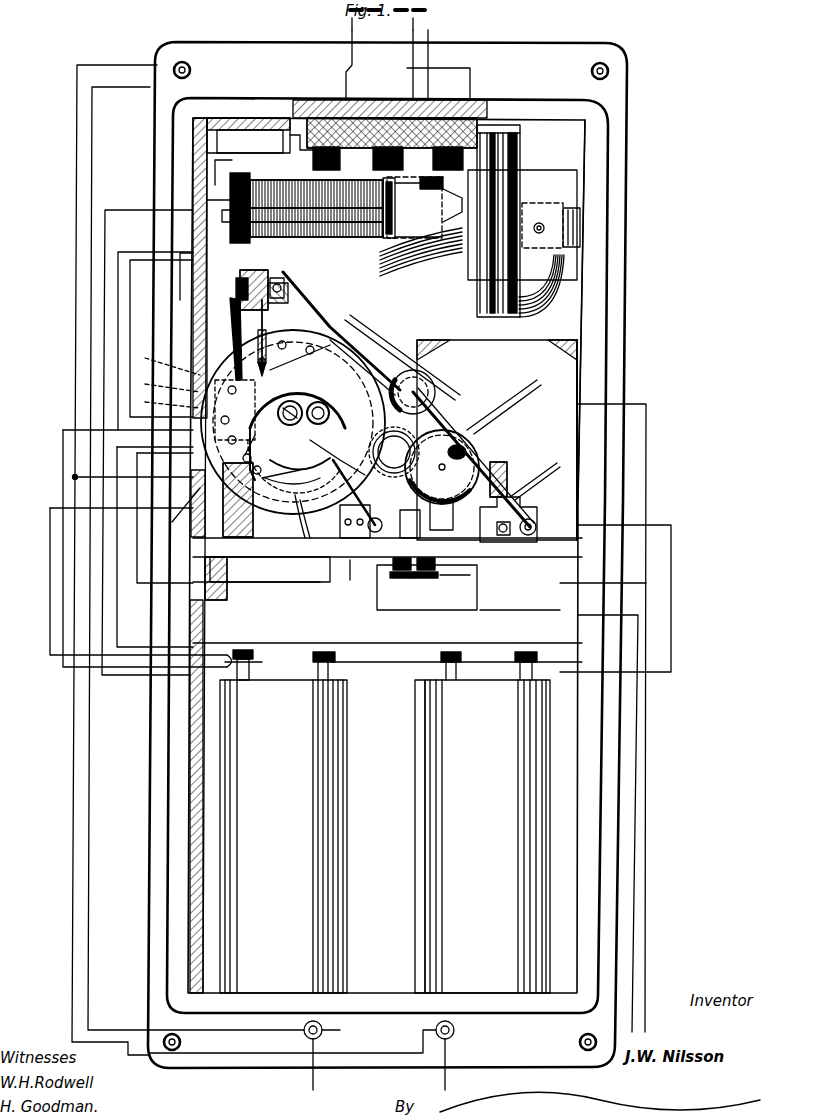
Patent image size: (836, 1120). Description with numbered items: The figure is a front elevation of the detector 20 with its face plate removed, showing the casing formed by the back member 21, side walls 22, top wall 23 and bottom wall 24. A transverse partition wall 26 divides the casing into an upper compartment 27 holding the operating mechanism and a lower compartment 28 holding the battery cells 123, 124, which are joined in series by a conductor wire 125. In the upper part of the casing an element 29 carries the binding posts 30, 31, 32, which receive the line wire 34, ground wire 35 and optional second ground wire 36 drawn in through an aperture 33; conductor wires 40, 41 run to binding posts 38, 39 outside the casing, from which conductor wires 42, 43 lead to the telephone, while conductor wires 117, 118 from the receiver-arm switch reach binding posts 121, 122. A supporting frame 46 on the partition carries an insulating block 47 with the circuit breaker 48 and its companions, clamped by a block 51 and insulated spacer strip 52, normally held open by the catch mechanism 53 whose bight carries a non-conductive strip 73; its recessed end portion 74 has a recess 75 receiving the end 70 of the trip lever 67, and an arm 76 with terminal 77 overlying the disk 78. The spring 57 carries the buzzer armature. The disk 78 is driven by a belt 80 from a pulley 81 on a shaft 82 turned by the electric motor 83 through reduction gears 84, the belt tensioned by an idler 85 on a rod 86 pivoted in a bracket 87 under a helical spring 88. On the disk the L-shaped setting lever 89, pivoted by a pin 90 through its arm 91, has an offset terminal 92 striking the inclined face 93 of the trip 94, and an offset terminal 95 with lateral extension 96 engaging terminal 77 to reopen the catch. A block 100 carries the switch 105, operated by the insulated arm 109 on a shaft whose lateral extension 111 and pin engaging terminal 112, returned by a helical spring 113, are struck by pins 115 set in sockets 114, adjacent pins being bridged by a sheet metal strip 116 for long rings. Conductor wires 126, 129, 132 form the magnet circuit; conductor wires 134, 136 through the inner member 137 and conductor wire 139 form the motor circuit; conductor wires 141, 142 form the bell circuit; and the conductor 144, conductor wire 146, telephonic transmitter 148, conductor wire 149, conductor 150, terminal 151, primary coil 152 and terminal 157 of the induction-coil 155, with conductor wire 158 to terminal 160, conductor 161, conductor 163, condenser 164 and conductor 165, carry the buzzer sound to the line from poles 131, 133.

The detector 20 is at (610, 336).
The back member 21 is at (620, 133).
The side walls 22 is at (175, 318).
The top wall 23 is at (522, 108).
The bottom wall 24 is at (518, 1017).
The partition wall 26 is at (322, 560).
The upper compartment 27 is at (565, 318).
The lower compartment 28 is at (560, 826).
The cover 29 is at (478, 135).
The binding post 30 is at (448, 195).
The binding post 31 is at (425, 180).
The binding post 32 is at (287, 200).
The aperture 33 is at (372, 198).
The line wire 34 is at (432, 52).
The ground wire 35 is at (413, 58).
The second ground wire 36 is at (350, 58).
The binding post 38 is at (454, 1036).
The binding post 39 is at (324, 1032).
The conductor wire 40 is at (76, 216).
The conductor wire 41 is at (92, 172).
The conductor wire 42 is at (448, 1080).
The conductor wire 43 is at (310, 1075).
The supporting frame 46 is at (300, 297).
The block 47 is at (165, 358).
The circuit breaker 48 is at (200, 305).
The block 51 is at (164, 398).
The insulated spacer strip 52 is at (165, 380).
The catch mechanism 53 is at (245, 292).
The spring 57 is at (271, 374).
The trip lever 67 is at (280, 310).
The end of trip lever 70 is at (283, 290).
The strip of non-conductive material 73 is at (240, 330).
The end portion 74 is at (270, 280).
The recess 75 is at (308, 312).
The arm 76 is at (288, 339).
The terminal 77 is at (262, 380).
The disk 78 is at (385, 390).
The belt 80 is at (372, 342).
The pulley 81 is at (460, 430).
The shaft 82 is at (455, 450).
The electric motor 83 is at (292, 472).
The train of reduction gears 84 is at (353, 457).
The idler 85 is at (430, 378).
The rod 86 is at (430, 420).
The bracket 87 is at (535, 524).
The helical spring 88 is at (530, 522).
The setting lever 89 is at (322, 392).
The pin 90 is at (300, 455).
The arm 91 is at (308, 440).
The offset terminal 92 is at (330, 418).
The inclined face 93 is at (271, 436).
The trip 94 is at (252, 500).
The offset terminal 95 is at (286, 422).
The lateral extension 96 is at (281, 461).
The block 100 is at (335, 542).
The switch 105 is at (367, 521).
The insulated arm 109 is at (366, 496).
The lateral extension 111 is at (394, 452).
The pin engaging terminal 112 is at (395, 446).
The helical spring 113 is at (372, 545).
The sockets 114 is at (310, 338).
The pins 115 is at (193, 485).
The strip of sheet metal 116 is at (296, 540).
The conductor wire 117 is at (647, 760).
The conductor wire 118 is at (650, 780).
The binding post 121 is at (440, 600).
The binding post 122 is at (410, 580).
The cell 123 is at (487, 836).
The cell 124 is at (283, 836).
The conductor wire 125 is at (388, 668).
The conductor wire 126 is at (423, 519).
The conductor wire 129 is at (116, 557).
The pole 131 is at (240, 652).
The conductor wire 132 is at (470, 575).
The pole 133 is at (520, 658).
The conductor wire 134 is at (62, 470).
The conductor wire 136 is at (278, 575).
The inner member 137 is at (312, 516).
The conductor wire 139 is at (671, 612).
The conductor wire 141 is at (505, 612).
The conductor wire 142 is at (396, 452).
The conductor 144 is at (320, 652).
The conductor wire 146 is at (118, 345).
The telephonic transmitter 148 is at (421, 226).
The conductor wire 149 is at (468, 210).
The conductor 150 is at (465, 200).
The terminal 151 is at (470, 190).
The primary coil 152 is at (316, 199).
The induction-coil 155 is at (551, 220).
The terminal 157 is at (213, 200).
The conductor wire 158 is at (128, 300).
The terminal 160 is at (444, 262).
The conductor 161 is at (75, 477).
The conductor 163 is at (232, 160).
The condenser 164 is at (260, 135).
The conductor 165 is at (298, 130).